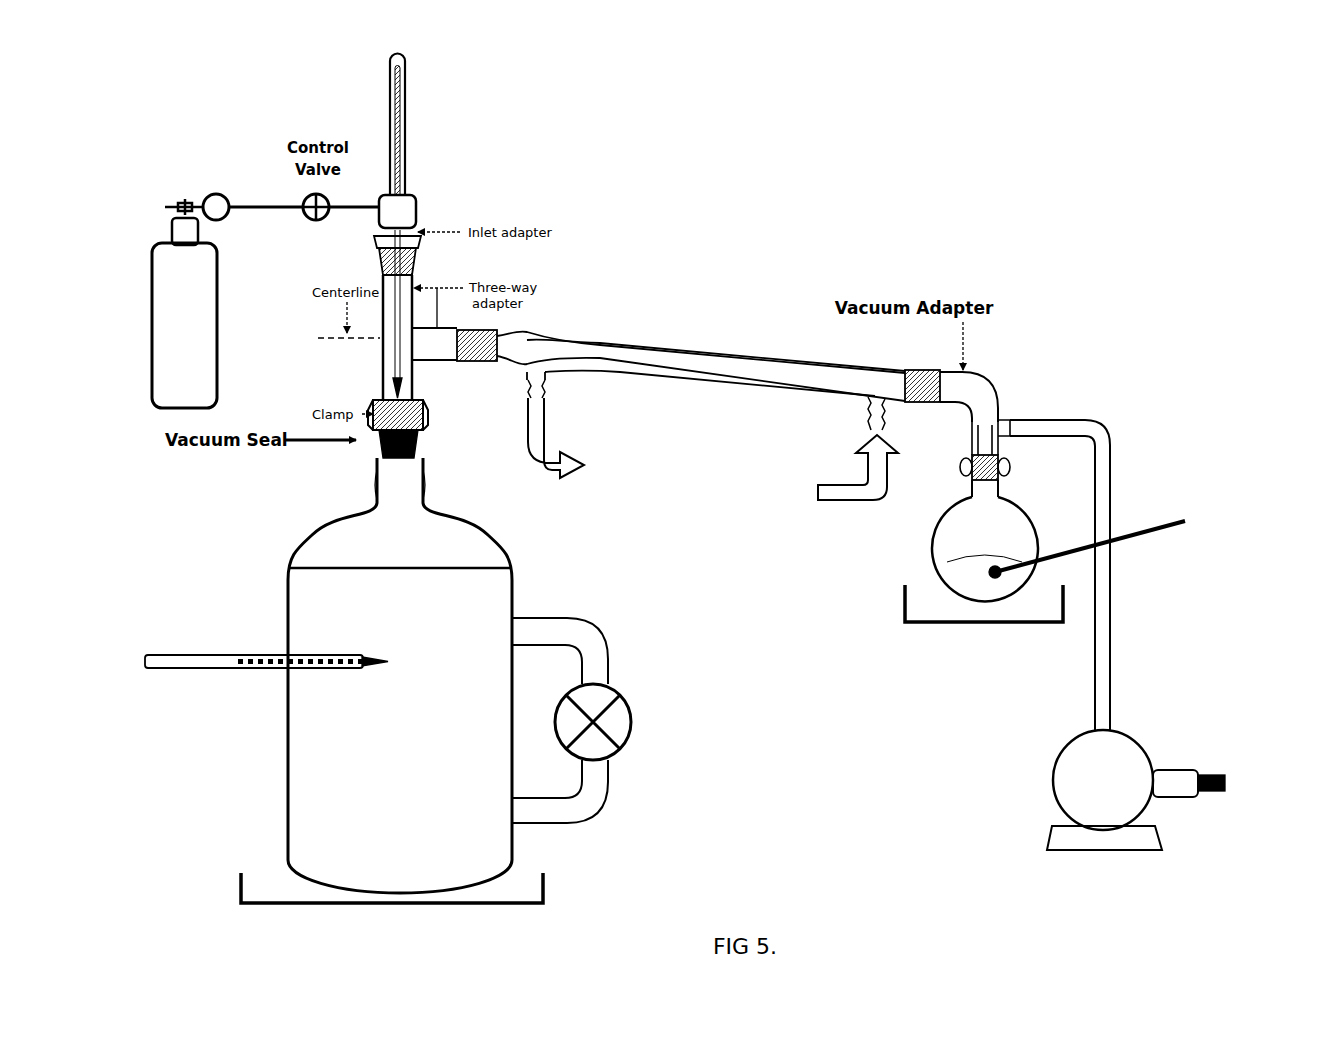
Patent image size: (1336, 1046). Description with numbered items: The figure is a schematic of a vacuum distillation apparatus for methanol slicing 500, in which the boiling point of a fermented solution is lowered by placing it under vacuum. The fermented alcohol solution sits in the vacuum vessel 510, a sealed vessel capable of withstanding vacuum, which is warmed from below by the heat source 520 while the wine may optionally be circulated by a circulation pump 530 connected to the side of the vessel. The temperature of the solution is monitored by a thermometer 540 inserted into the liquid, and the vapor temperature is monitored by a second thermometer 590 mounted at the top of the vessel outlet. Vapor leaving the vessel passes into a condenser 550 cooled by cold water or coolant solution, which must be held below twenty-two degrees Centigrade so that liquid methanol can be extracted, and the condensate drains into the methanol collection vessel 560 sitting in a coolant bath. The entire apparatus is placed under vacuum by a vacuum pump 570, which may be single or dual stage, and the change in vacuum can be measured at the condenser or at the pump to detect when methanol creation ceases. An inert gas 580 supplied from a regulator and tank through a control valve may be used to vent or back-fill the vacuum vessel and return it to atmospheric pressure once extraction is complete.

The vacuum distillation apparatus for methanol slicing 500 is at (882, 147).
The vacuum vessel containing fermented alcohol solution 510 is at (372, 863).
The heat source 520 is at (367, 961).
The circulation pump 530 is at (681, 777).
The thermometer 540 is at (166, 704).
The condenser 550 is at (585, 360).
The methanol collection vessel 560 is at (930, 547).
The vacuum pump 570 is at (994, 793).
The inert gas 580 is at (223, 295).
The vapor thermometer 590 is at (409, 131).